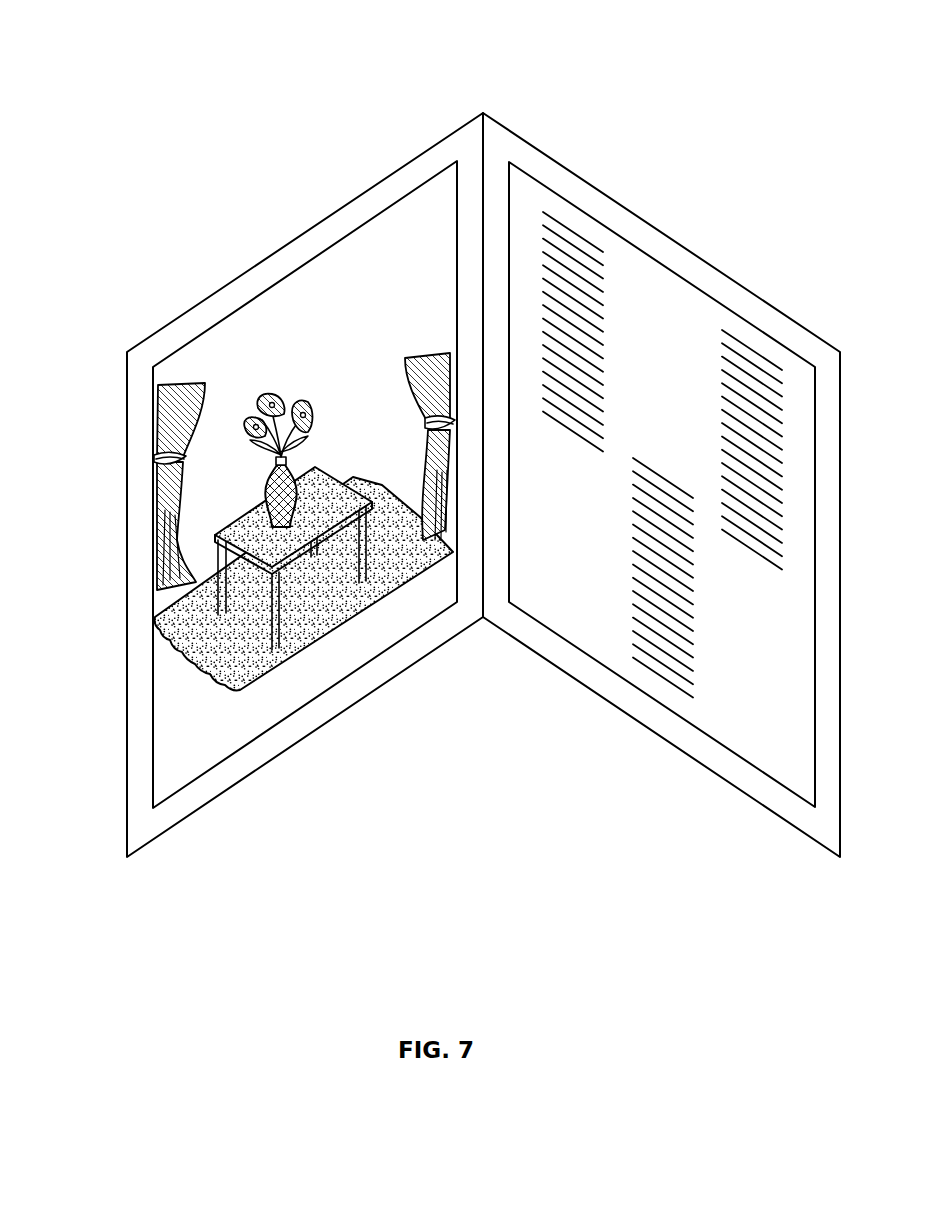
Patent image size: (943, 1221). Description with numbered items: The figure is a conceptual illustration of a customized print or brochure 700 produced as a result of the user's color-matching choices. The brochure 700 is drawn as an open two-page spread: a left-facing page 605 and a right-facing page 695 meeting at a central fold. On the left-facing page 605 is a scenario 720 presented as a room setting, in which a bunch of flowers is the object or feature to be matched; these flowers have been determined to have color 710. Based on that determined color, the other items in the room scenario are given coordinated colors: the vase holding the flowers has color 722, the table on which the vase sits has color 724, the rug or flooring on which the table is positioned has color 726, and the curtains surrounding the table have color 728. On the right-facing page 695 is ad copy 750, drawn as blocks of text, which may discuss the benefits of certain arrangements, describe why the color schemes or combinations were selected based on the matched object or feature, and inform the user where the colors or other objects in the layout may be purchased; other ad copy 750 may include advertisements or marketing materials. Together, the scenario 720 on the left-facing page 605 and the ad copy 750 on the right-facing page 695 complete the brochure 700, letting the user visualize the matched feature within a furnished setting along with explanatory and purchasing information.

The customized print or brochure 700 is at (175, 67).
The left-facing page 605 is at (140, 825).
The right-facing page 695 is at (815, 828).
The scenario 720 is at (108, 553).
The color 710 is at (263, 393).
The color 722 is at (300, 463).
The color 724 is at (328, 498).
The color 726 is at (303, 645).
The color 728 is at (168, 432).
The ad copy 750 is at (666, 412).